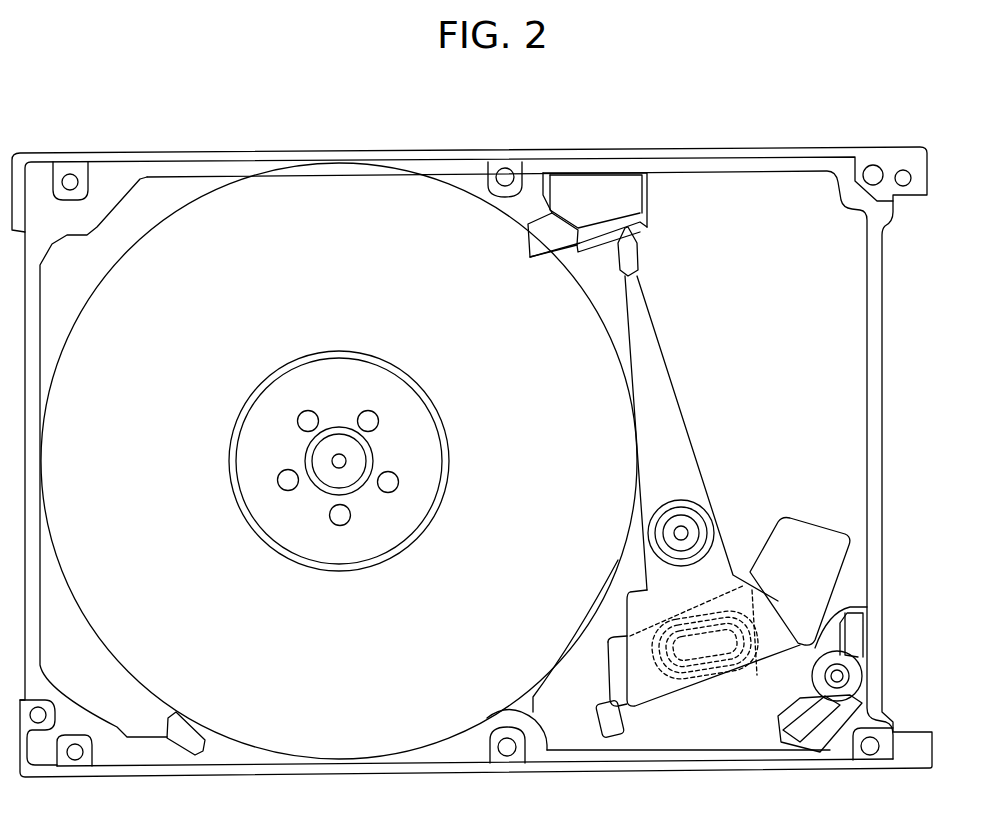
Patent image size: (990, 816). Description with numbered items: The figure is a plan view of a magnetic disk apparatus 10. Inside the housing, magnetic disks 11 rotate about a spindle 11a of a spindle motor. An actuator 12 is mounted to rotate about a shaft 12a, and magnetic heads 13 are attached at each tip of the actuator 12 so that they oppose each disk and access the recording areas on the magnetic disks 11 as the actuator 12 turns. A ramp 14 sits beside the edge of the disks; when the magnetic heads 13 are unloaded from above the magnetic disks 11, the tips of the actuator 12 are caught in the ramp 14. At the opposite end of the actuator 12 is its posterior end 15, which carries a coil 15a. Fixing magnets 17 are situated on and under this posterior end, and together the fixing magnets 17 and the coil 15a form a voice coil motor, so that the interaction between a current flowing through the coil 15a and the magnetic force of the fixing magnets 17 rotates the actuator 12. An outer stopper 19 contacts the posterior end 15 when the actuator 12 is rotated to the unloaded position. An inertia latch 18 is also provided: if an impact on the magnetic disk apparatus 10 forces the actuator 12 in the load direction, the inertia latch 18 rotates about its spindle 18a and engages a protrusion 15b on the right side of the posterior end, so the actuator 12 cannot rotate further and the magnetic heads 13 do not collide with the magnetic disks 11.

The magnetic disk apparatus 10 is at (805, 79).
The magnetic disks 11 is at (388, 207).
The spindle 11a is at (348, 457).
The actuator 12 is at (667, 458).
The shaft 12a is at (684, 530).
The magnetic heads 13 is at (640, 255).
The ramp 14 is at (597, 184).
The posterior end 15 is at (780, 604).
The coil 15a is at (760, 582).
The protrusion 15b is at (850, 607).
The fixing magnets 17 is at (810, 537).
The inertia latch 18 is at (860, 645).
The spindle 18a is at (863, 670).
The outer stopper 19 is at (596, 722).